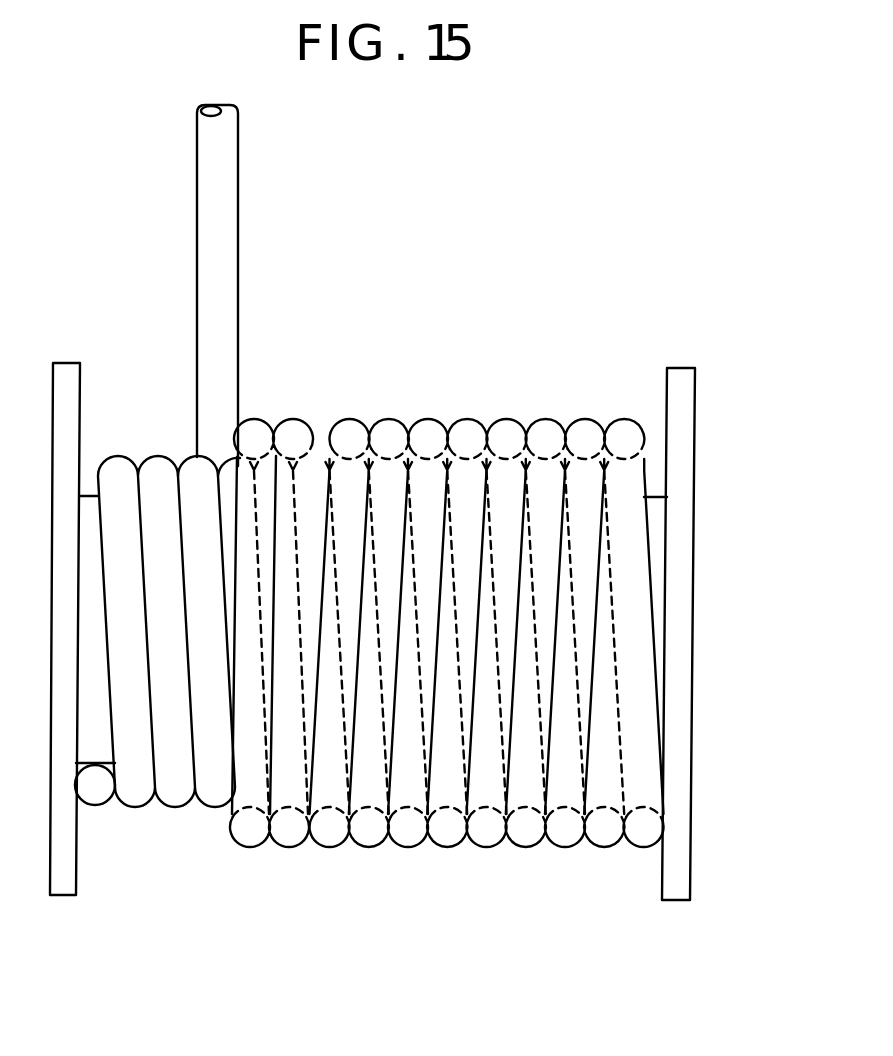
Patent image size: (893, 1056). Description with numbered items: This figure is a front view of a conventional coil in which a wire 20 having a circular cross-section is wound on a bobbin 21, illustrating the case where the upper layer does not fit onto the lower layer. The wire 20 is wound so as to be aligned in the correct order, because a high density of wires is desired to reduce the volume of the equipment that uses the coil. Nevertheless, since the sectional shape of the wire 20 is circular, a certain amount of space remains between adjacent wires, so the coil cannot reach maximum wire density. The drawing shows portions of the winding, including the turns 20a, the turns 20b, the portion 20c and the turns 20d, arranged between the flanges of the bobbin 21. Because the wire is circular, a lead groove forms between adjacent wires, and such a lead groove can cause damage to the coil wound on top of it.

The wire 20 is at (227, 188).
The large-diameter coil portion 20a is at (172, 773).
The small-diameter coil portion 20b is at (450, 827).
The transition portion of coil 20c is at (180, 463).
The closely wound end turns 20d is at (275, 422).
The bobbin 21 is at (683, 497).